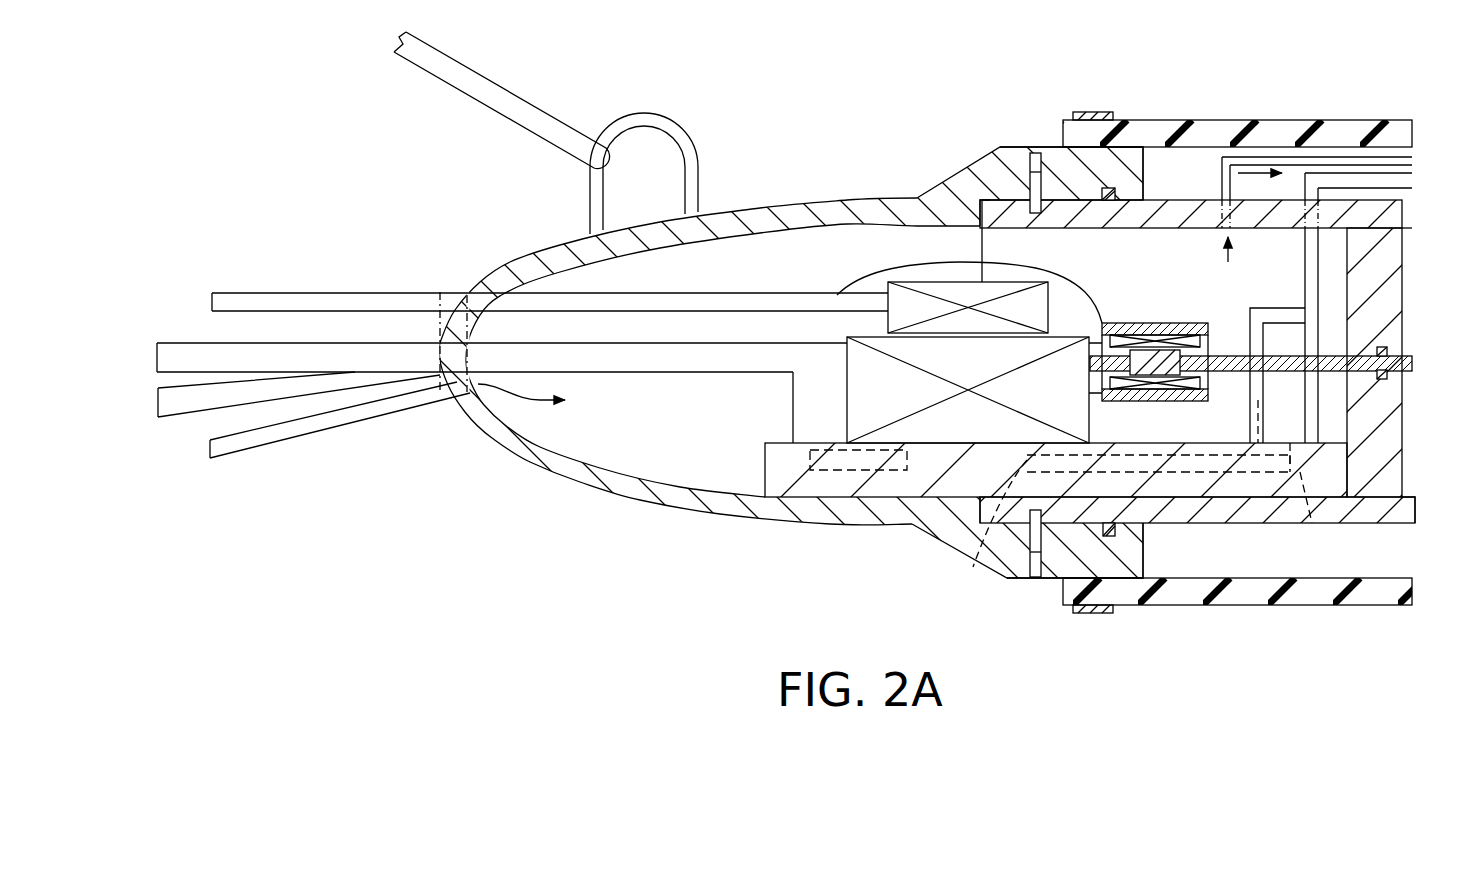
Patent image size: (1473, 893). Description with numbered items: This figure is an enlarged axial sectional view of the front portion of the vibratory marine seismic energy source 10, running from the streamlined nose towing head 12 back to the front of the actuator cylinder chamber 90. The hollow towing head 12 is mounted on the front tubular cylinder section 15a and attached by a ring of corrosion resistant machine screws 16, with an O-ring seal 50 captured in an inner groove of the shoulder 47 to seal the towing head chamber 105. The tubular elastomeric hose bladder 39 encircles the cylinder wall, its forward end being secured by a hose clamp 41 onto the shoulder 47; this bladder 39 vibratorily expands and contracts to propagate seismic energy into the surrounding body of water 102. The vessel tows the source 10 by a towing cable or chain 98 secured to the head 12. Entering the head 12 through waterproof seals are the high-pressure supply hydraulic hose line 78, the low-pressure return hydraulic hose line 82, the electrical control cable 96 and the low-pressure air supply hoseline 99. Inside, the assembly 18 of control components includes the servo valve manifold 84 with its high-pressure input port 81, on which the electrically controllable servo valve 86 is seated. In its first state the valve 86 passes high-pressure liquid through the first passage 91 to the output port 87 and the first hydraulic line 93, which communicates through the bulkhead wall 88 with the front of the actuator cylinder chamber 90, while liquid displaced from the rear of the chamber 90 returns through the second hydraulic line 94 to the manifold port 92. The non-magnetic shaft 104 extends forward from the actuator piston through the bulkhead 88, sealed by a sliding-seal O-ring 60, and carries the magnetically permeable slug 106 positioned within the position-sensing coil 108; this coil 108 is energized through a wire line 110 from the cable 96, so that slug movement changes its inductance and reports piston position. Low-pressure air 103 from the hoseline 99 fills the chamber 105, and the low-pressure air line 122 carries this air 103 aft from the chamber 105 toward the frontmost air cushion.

The vibratory marine seismic energy source 10 is at (631, 82).
The streamlined nose towing head 12 is at (518, 250).
The front tubular cylinder section 15a is at (1201, 193).
The machine screws 16 is at (1032, 172).
The assembly of control and operating components 18 is at (893, 258).
The elastomeric hose bladder 39 is at (1354, 117).
The hose clamp 41 is at (1098, 111).
The shoulder 47 is at (1053, 162).
The O-ring seal 50 is at (1112, 188).
The sliding-seal O-ring 60 is at (1392, 378).
The high-pressure supply hydraulic hose line 78 is at (198, 345).
The high-pressure hydraulic liquid input port 81 is at (900, 452).
The low-pressure return hydraulic hose line 82 is at (186, 404).
The servo valve manifold 84 is at (848, 482).
The servo valve 86 is at (902, 396).
The output port 87 is at (1258, 442).
The bulkhead wall 88 is at (1398, 480).
The actuator cylinder chamber 90 is at (1410, 270).
The first passage 91 is at (988, 530).
The port 92 is at (1312, 525).
The first hydraulic line 93 is at (1258, 305).
The second hydraulic line 94 is at (1410, 183).
The electrical control cable 96 is at (300, 293).
The towing cable or chain 98 is at (429, 66).
The low-pressure air supply hoseline 99 is at (282, 442).
The surrounding body of water 102 is at (1302, 44).
The low-pressure air 103 is at (530, 393).
The non-magnetic shaft 104 is at (1408, 350).
The towing head chamber 105 is at (712, 421).
The magnetically permeable slug 106 is at (1140, 378).
The position-sensing coil 108 is at (1167, 321).
The wire line 110 is at (1074, 283).
The low-pressure air line 122 is at (1274, 156).